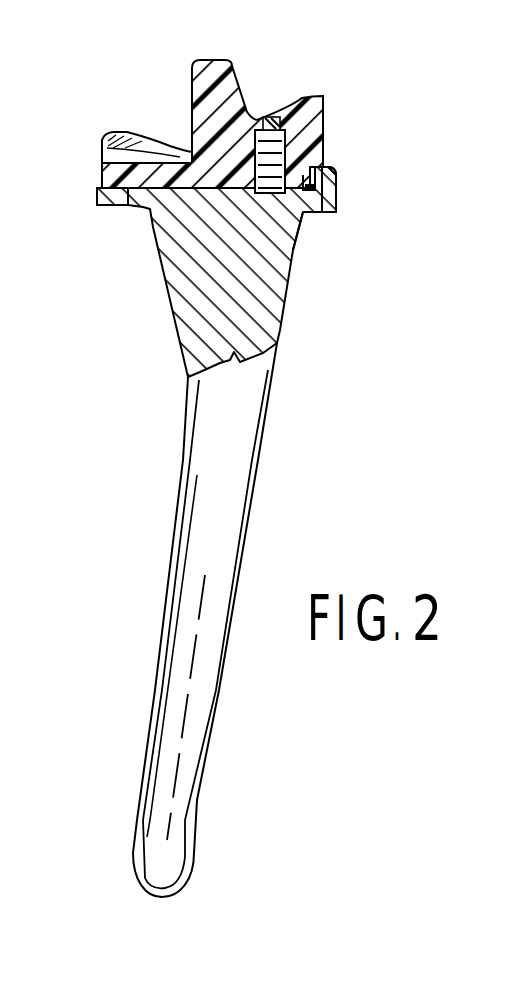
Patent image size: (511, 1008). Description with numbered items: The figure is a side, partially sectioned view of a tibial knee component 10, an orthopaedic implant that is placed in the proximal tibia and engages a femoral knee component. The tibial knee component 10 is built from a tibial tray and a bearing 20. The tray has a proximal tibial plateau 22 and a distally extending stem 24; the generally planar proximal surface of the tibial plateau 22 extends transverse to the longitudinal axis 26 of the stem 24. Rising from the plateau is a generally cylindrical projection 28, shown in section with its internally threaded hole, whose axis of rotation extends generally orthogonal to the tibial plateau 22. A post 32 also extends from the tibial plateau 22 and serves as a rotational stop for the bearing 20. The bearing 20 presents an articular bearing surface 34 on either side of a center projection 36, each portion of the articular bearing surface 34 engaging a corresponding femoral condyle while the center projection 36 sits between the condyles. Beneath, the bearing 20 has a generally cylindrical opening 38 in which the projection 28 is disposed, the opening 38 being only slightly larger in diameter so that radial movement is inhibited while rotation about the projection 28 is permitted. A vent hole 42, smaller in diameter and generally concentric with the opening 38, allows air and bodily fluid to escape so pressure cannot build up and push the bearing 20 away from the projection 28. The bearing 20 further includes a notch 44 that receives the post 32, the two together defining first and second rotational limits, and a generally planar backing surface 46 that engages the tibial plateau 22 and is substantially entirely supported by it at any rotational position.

The tibial knee component 10 is at (424, 106).
The bearing 20 is at (241, 87).
The tibial plateau 22 is at (97, 190).
The stem 24 is at (247, 530).
The longitudinal axis 26 is at (185, 712).
The projection 28 is at (284, 131).
The post 32 is at (337, 195).
The articular bearing surface 34 is at (152, 147).
The center projection 36 is at (212, 66).
The opening 38 is at (277, 190).
The vent hole 42 is at (323, 96).
The notch 44 is at (337, 167).
The backing surface 46 is at (133, 206).